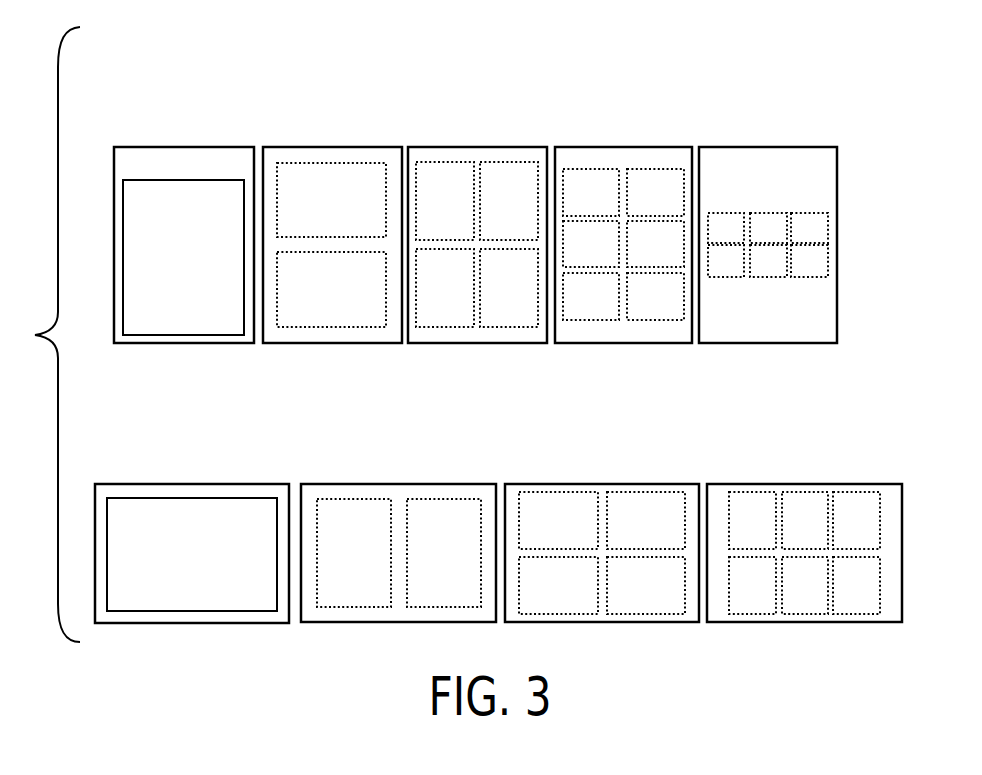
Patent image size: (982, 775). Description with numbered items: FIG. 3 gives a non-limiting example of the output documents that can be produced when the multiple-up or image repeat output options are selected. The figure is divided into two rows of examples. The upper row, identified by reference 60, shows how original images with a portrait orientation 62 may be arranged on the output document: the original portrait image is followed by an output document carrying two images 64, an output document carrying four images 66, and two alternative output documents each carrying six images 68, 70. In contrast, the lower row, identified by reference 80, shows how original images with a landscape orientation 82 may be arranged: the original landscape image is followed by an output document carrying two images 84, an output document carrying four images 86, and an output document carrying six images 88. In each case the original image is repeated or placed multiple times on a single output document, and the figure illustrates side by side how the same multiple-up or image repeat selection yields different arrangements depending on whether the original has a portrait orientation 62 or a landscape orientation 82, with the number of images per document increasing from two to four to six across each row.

The examples of portrait-oriented output documents 60 is at (144, 72).
The original image with portrait orientation 62 is at (184, 158).
The two-image portrait output document 64 is at (346, 158).
The four-image portrait output document 66 is at (484, 158).
The six-image portrait output document 68 is at (619, 158).
The six-image portrait output document 70 is at (768, 158).
The examples of landscape-oriented output documents 80 is at (143, 454).
The original image with landscape orientation 82 is at (192, 492).
The two-image landscape output document 84 is at (403, 490).
The four-image landscape output document 86 is at (603, 490).
The six-image landscape output document 88 is at (803, 490).